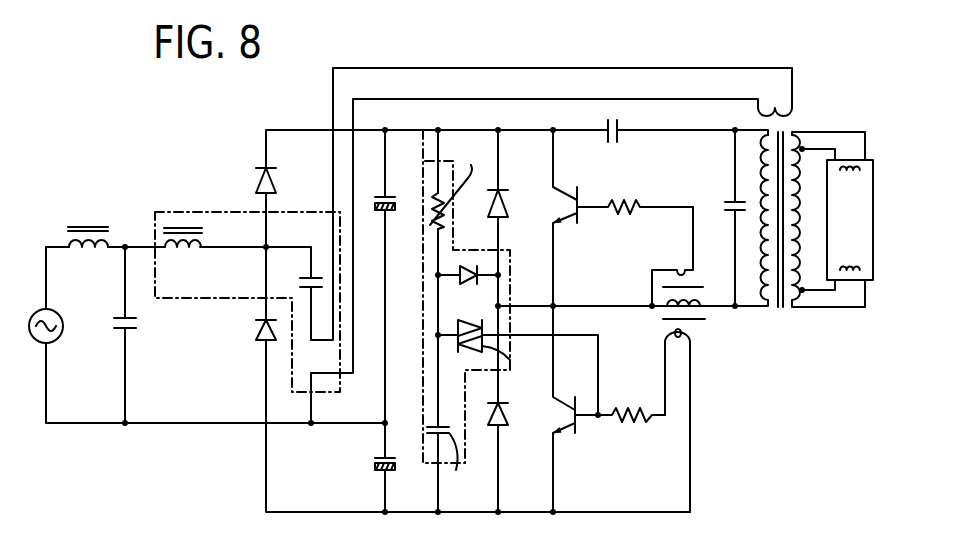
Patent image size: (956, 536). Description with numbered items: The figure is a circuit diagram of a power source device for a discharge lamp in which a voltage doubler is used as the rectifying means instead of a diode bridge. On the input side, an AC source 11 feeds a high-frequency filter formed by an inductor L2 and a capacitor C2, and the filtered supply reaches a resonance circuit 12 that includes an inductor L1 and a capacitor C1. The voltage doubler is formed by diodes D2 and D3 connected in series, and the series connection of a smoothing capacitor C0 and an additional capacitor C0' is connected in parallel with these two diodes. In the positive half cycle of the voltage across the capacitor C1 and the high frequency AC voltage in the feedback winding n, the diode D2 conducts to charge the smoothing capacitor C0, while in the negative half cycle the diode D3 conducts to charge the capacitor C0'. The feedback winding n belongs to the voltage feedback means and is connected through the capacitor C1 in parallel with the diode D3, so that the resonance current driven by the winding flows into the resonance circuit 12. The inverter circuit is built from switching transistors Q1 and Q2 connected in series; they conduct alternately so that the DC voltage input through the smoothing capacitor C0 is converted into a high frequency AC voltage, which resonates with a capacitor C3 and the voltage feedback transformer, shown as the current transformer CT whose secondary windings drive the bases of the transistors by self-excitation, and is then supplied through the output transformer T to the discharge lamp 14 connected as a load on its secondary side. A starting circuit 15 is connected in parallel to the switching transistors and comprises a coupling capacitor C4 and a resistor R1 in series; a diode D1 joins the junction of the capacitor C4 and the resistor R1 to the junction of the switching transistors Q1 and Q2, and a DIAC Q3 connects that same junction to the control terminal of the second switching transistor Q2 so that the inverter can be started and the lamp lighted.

The AC source 11 is at (57, 315).
The resonance circuit 12 is at (186, 211).
The discharge lamp 14 is at (830, 291).
The starting circuit 15 is at (426, 112).
The inductor L1 is at (202, 235).
The inductor L2 is at (88, 219).
The capacitor C1 is at (296, 270).
The capacitor C2 is at (143, 335).
The smoothing capacitor C0 is at (398, 185).
The additional capacitor C0' is at (358, 481).
The capacitor C3 is at (718, 187).
The coupling capacitor C4 is at (455, 468).
The diode D1 is at (502, 307).
The diode D2 is at (288, 183).
The diode D3 is at (248, 347).
The resistor R1 is at (460, 180).
The switching transistor Q1 is at (623, 218).
The switching transistor Q2 is at (609, 409).
The DIAC Q3 is at (500, 354).
The current transformer CT is at (697, 391).
The transformer T is at (800, 239).
The feedback winding n is at (773, 83).